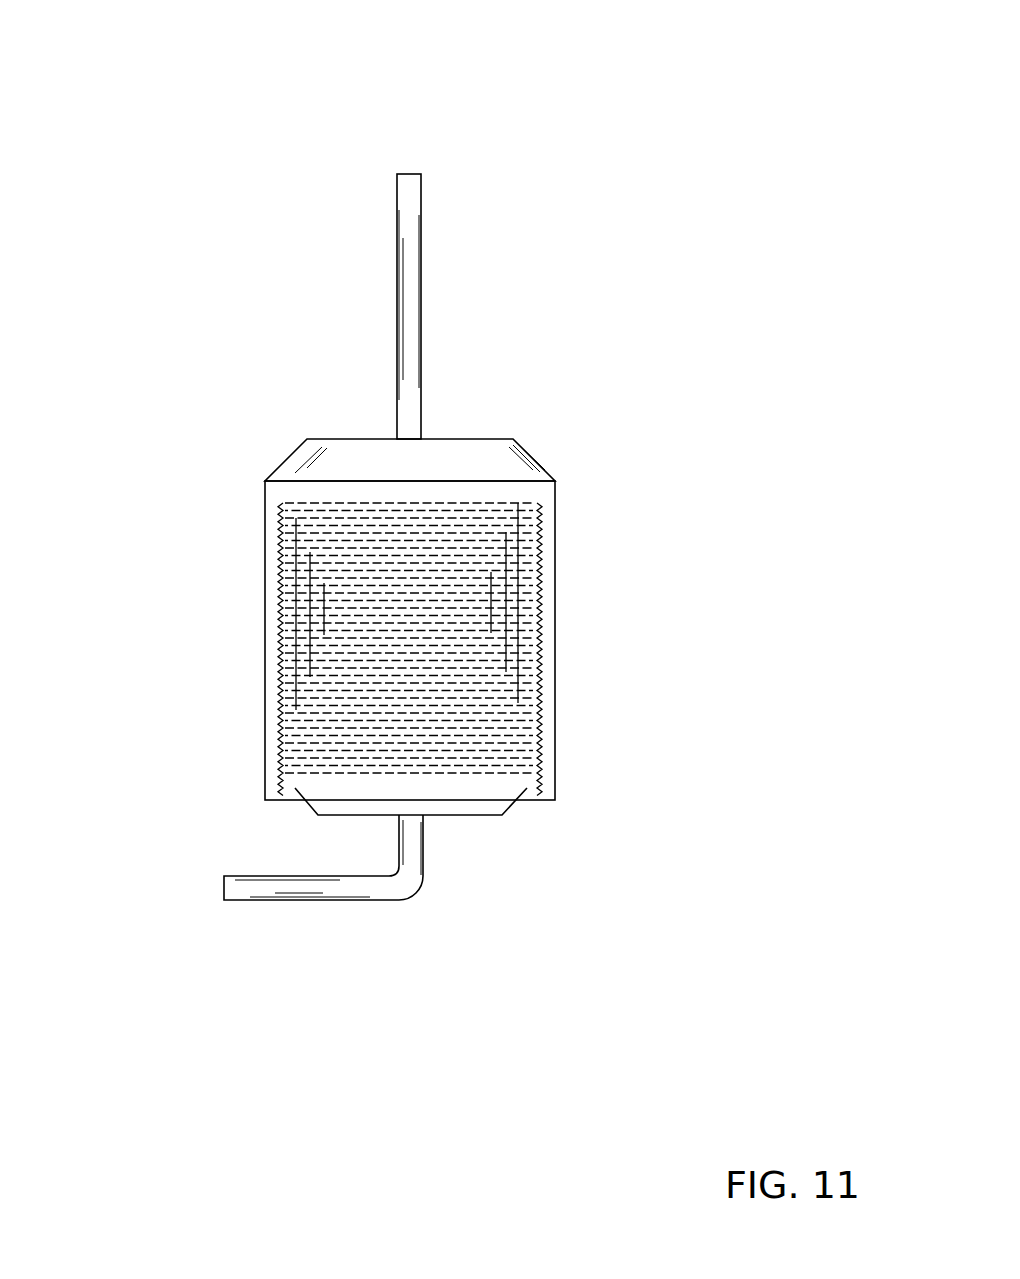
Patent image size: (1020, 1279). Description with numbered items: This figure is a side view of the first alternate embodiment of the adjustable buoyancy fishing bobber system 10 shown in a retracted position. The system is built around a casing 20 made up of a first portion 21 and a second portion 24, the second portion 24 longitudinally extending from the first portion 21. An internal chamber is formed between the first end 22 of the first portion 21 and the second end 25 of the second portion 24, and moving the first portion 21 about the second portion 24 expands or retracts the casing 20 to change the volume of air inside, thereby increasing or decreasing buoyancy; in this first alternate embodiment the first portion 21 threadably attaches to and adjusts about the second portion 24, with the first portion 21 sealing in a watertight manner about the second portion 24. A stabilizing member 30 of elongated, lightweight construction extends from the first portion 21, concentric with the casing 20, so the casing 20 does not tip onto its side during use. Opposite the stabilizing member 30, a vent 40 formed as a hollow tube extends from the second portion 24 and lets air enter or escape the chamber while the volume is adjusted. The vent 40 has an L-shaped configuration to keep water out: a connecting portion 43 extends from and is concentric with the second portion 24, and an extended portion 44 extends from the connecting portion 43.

The adjustable buoyancy fishing bobber system 10 is at (605, 95).
The casing 20 is at (404, 630).
The first portion 21 is at (265, 527).
The first end 22 is at (465, 439).
The second portion 24 is at (282, 700).
The second end 25 is at (473, 815).
The stabilizing member 30 is at (421, 236).
The vent 40 is at (349, 950).
The connecting portion 43 is at (423, 848).
The extended portion 44 is at (238, 900).